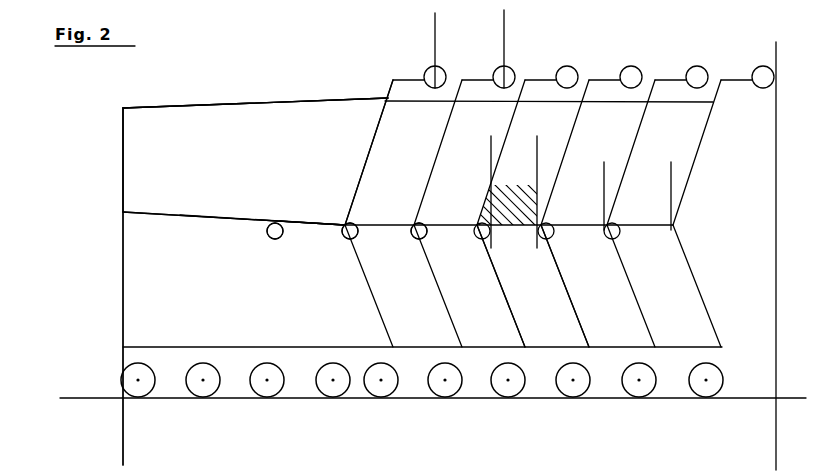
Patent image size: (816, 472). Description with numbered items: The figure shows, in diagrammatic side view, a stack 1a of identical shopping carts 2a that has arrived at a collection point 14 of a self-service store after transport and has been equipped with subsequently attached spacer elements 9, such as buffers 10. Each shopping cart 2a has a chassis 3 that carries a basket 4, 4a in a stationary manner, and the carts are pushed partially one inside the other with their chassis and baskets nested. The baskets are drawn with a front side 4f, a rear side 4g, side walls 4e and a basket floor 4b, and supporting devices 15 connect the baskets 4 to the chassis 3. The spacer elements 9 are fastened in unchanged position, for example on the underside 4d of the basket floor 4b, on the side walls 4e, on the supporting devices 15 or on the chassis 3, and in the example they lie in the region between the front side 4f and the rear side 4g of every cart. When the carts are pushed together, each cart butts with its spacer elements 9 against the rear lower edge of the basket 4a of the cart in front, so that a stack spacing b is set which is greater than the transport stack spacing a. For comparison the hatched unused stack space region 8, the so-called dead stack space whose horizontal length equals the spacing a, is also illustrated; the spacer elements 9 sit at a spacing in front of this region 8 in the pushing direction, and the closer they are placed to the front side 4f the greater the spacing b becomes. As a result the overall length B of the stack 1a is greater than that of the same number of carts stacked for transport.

The stack 1a is at (200, 250).
The shopping cart 2a is at (347, 85).
The chassis 3 is at (506, 305).
The basket 4 is at (222, 122).
The side walls of the basket 4e is at (255, 79).
The front side of the basket 4f is at (123, 150).
The basket 4a is at (255, 137).
The basket floor 4b is at (182, 216).
The underside of the basket floor 4d is at (226, 226).
The rear side of the basket 4g is at (368, 157).
The unused stack space region 8 is at (533, 286).
The spacer elements 9 is at (411, 236).
The buffers 10 is at (335, 267).
The collection point 14 is at (82, 213).
The supporting devices 15 is at (308, 224).
The stack spacing a is at (587, 146).
The stack spacing b is at (552, 27).
The length of the stack B is at (776, 447).